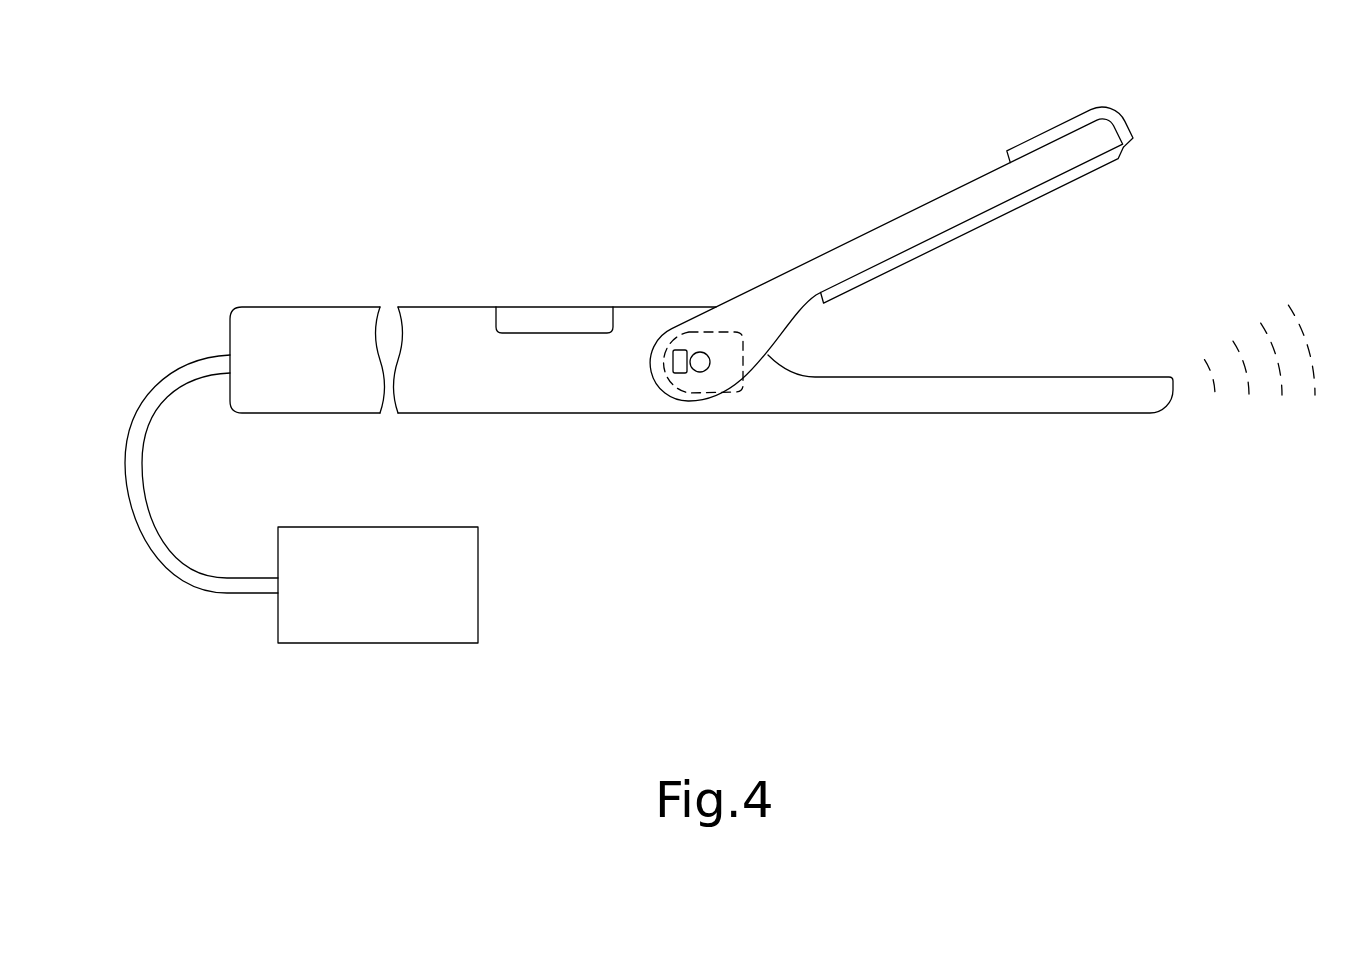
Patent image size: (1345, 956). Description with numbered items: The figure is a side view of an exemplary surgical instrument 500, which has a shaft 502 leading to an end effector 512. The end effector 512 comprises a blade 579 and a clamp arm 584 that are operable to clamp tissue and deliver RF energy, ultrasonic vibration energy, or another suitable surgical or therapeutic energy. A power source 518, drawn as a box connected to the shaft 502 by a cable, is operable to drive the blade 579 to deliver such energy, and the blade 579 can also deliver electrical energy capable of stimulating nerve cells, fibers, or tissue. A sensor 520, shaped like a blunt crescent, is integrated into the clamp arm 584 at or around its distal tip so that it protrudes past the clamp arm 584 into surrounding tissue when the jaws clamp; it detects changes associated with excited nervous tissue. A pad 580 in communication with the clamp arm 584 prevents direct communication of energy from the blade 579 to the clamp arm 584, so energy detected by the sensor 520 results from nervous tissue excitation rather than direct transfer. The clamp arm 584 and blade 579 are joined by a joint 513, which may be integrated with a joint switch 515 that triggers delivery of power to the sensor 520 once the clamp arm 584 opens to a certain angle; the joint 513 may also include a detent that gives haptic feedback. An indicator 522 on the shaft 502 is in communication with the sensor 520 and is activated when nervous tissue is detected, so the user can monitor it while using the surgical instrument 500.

The surgical instrument 500 is at (448, 107).
The shaft 502 is at (332, 306).
The end effector 512 is at (865, 522).
The joint 513 is at (704, 366).
The joint switch 515 is at (672, 363).
The power source 518 is at (480, 585).
The sensor 520 is at (1062, 130).
The indicator 522 is at (558, 306).
The blade 579 is at (1050, 376).
The pad 580 is at (1070, 170).
The clamp arm 584 is at (800, 265).